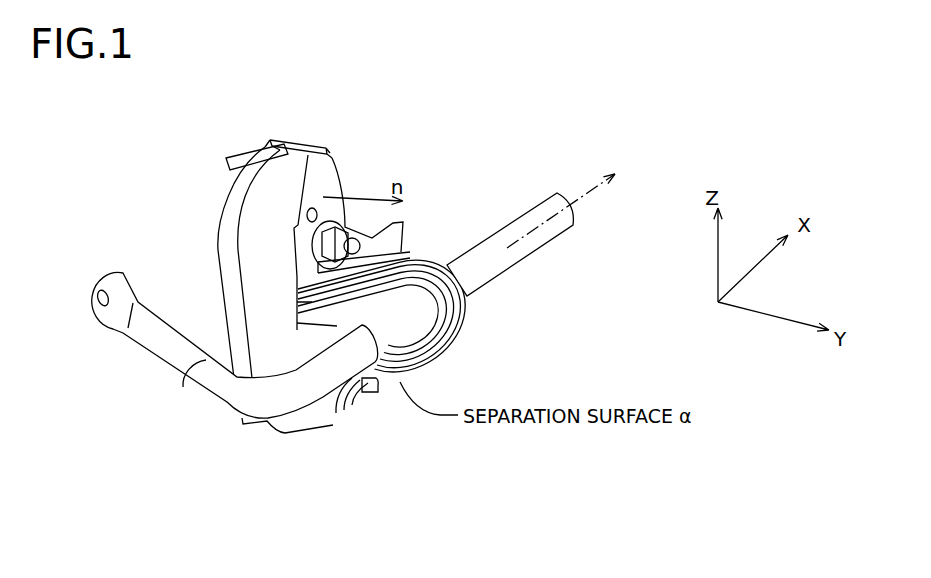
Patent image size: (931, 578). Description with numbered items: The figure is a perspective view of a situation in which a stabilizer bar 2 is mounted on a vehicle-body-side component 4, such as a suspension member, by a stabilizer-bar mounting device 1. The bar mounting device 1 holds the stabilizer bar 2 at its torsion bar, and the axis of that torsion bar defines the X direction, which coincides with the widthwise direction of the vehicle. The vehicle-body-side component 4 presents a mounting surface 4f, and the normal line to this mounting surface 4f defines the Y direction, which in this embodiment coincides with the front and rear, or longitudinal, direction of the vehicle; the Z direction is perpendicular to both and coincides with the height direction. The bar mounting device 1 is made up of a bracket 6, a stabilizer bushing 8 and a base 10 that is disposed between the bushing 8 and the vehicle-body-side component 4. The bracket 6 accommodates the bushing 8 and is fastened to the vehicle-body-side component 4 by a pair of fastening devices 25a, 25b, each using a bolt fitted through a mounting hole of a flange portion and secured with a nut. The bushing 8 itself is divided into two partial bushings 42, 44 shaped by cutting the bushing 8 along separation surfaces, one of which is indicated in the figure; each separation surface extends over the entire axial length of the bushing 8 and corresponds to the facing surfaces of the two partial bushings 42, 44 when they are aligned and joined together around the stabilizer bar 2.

The stabilizer-bar mounting device 1 is at (363, 307).
The stabilizer bar 2 is at (522, 226).
The vehicle-body-side component 4 is at (272, 305).
The mounting surface 4f is at (332, 182).
The bracket 6 is at (437, 340).
The stabilizer bushing 8 is at (387, 380).
The base 10 is at (306, 256).
The fastening device 25a is at (298, 252).
The fastening device 25b is at (331, 428).
The partial bushing 42 is at (384, 378).
The partial bushing 44 is at (330, 328).